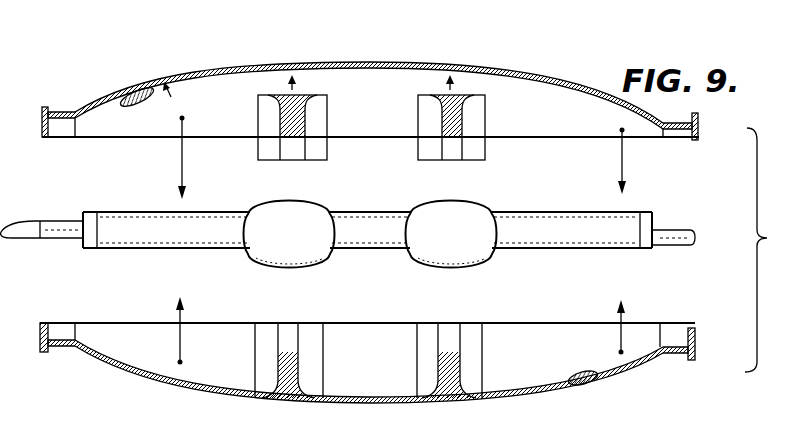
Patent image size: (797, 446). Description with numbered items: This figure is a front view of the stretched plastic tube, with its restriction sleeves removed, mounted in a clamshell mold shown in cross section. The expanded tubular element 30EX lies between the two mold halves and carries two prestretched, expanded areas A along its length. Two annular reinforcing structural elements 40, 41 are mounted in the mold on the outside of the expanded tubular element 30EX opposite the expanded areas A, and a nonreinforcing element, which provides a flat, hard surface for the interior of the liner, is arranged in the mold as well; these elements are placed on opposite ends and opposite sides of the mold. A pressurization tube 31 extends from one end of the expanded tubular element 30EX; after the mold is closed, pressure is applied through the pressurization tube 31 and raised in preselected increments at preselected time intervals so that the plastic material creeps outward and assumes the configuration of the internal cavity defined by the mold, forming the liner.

The annular reinforcing structural element 40 is at (306, 97).
The annular reinforcing structural element 41 is at (464, 97).
The expanded tubular element 30EX is at (132, 238).
The prestretched area A is at (306, 206).
The pressurization tube 31 is at (52, 238).